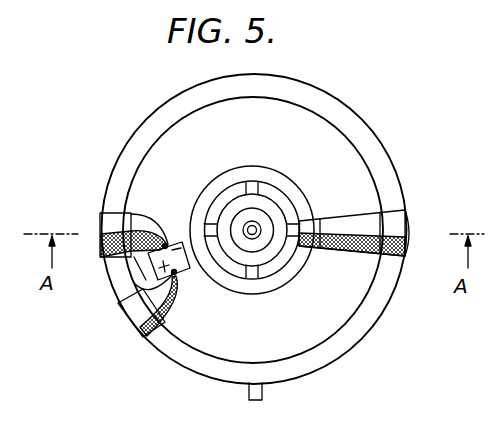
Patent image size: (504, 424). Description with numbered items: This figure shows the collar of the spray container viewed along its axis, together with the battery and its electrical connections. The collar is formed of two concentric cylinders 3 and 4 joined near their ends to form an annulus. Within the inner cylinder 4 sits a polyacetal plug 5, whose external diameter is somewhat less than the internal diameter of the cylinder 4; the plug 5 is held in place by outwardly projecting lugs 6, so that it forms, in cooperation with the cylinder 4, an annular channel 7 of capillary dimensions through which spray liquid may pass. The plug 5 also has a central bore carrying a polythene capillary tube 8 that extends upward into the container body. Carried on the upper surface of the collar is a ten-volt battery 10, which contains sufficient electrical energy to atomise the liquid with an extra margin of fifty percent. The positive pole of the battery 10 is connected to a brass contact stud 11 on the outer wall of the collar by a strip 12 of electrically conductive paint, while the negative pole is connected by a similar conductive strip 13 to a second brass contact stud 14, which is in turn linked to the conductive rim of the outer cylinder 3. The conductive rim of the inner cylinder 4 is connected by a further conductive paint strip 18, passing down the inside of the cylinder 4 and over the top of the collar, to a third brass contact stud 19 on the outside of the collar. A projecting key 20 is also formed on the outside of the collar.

The outer cylinder 3 is at (162, 107).
The inner cylinder 4 is at (276, 168).
The plug 5 is at (238, 256).
The lugs 6 is at (256, 276).
The annular channel 7 is at (283, 197).
The capillary tube 8 is at (246, 226).
The battery 10 is at (183, 242).
The contact stud 11 is at (128, 326).
The strip of electrically conductive paint 12 is at (173, 312).
The conductive strip 13 is at (131, 197).
The second contact stud 14 is at (98, 231).
The conductive paint strip 18 is at (340, 250).
The third contact stud 19 is at (407, 213).
The projecting key 20 is at (262, 393).